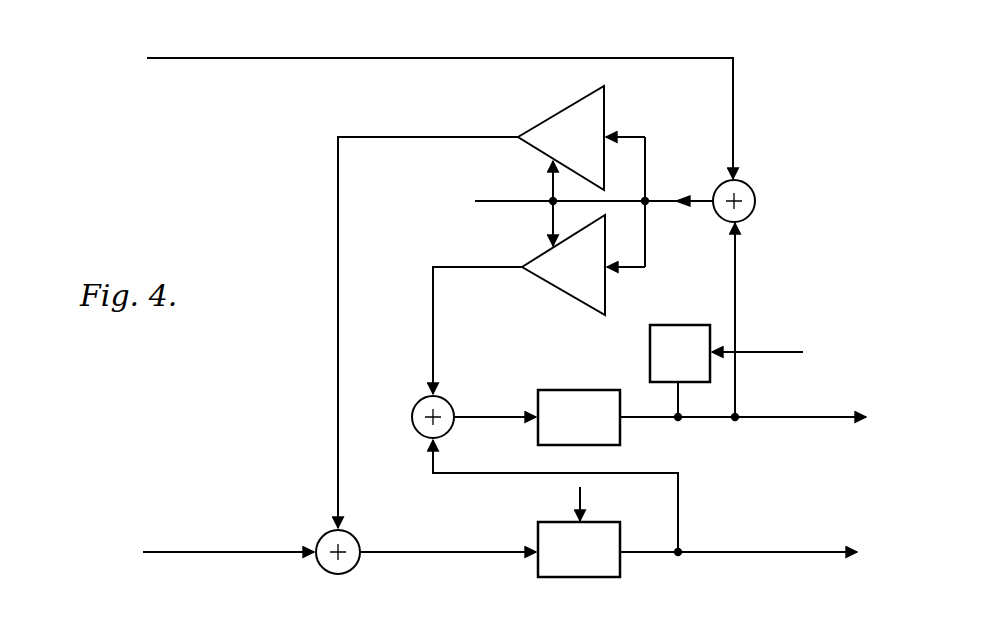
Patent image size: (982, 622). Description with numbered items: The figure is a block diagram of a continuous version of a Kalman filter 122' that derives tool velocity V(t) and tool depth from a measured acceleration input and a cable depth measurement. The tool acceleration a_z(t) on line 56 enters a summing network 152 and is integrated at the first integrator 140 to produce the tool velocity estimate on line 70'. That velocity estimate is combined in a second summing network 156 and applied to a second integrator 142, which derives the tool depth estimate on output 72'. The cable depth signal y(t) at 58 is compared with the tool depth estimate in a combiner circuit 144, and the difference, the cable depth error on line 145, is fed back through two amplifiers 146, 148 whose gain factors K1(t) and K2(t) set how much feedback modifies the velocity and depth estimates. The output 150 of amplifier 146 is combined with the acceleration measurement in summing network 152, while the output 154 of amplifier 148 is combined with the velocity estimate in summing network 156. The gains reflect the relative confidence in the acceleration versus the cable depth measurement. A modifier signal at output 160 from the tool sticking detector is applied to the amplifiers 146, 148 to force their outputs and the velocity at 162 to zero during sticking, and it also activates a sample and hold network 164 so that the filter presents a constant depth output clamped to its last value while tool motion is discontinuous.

The cable depth signal 58 is at (344, 56).
The output of amplifier 150 is at (428, 143).
The Kalman filter 122' is at (285, 225).
The amplifier 146 is at (565, 108).
The amplifier 148 is at (565, 294).
The cable depth error line 145 is at (698, 206).
The modifier signal output 160 is at (524, 186).
The combiner circuit 144 is at (754, 202).
The output of amplifier 154 is at (455, 265).
The summing network 156 is at (410, 402).
The second integrator 142 is at (580, 390).
The sample and hold network 164 is at (648, 362).
The tool depth estimate output 72' is at (763, 334).
The velocity 162 is at (623, 488).
The tool acceleration line 56 is at (237, 550).
The summing network 152 is at (362, 536).
The integrator 140 is at (538, 573).
The tool velocity estimate line 70' is at (751, 562).